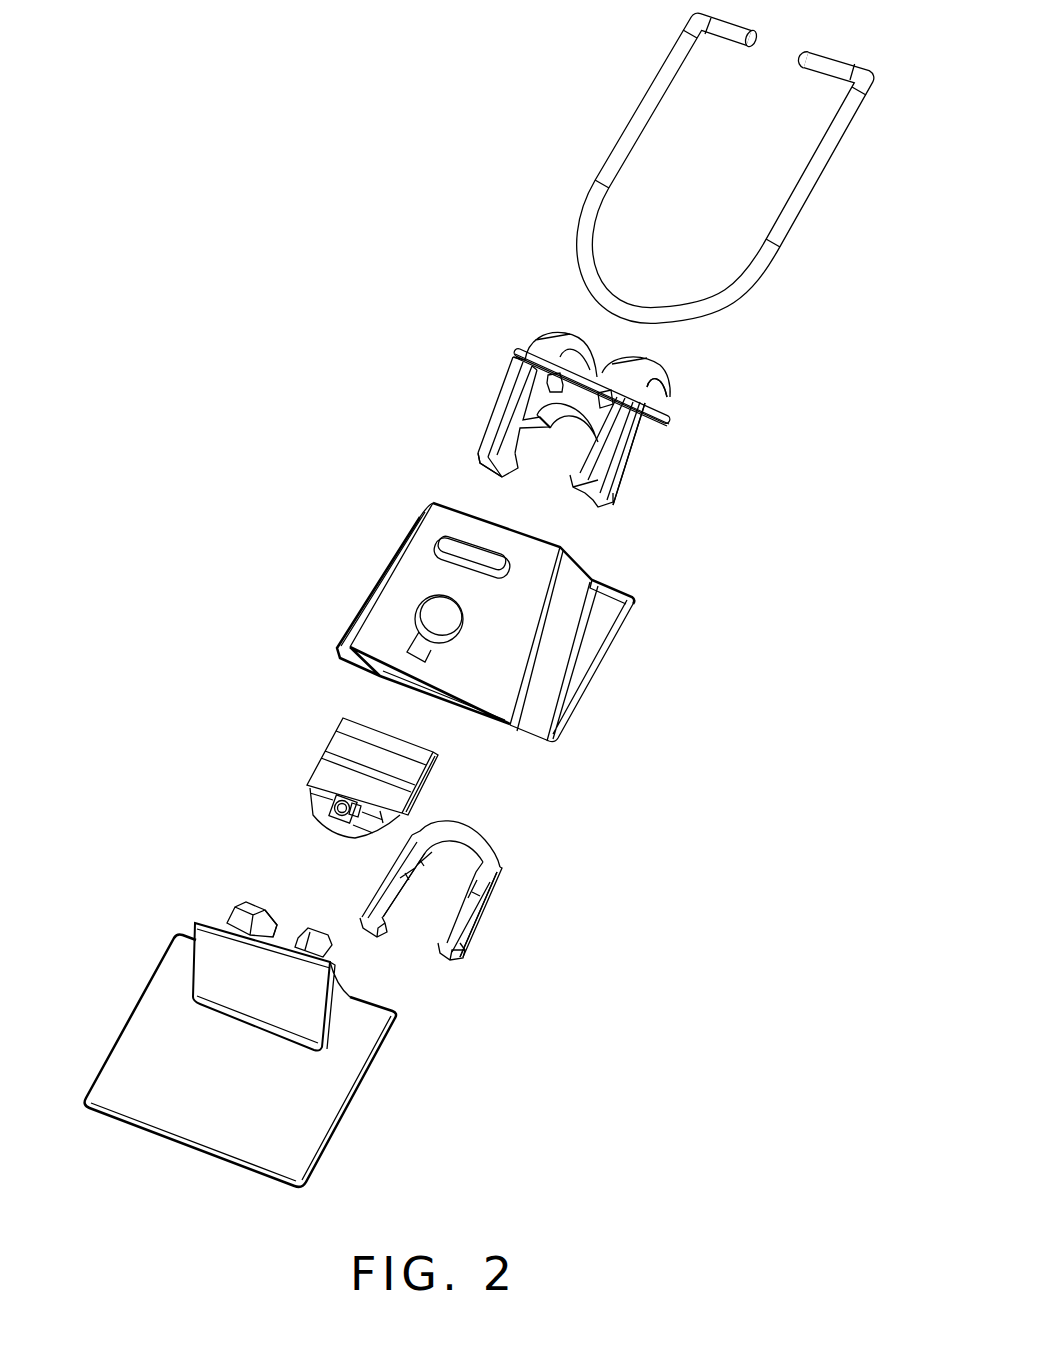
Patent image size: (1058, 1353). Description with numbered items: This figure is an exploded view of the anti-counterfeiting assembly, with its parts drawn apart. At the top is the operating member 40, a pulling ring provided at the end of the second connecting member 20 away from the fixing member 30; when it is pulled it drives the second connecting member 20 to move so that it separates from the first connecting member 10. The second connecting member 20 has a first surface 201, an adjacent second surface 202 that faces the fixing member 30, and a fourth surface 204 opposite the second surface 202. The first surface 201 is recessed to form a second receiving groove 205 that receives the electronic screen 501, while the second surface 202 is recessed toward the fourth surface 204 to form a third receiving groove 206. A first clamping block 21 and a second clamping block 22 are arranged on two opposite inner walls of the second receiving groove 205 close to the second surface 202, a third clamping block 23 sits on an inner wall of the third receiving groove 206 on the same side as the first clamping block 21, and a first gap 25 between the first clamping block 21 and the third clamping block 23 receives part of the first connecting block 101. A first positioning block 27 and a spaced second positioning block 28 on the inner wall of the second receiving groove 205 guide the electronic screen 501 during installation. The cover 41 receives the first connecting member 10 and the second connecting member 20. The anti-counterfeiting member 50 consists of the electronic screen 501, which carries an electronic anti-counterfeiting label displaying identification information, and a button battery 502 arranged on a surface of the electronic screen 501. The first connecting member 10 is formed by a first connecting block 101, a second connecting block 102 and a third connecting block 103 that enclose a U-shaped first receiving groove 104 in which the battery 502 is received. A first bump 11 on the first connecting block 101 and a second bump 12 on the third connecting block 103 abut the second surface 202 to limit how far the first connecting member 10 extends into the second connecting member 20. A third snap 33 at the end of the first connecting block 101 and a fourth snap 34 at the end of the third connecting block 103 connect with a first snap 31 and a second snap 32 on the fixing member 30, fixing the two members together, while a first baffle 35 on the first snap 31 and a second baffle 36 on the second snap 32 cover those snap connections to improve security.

The first connecting member 10 is at (467, 914).
The first bump 11 is at (373, 890).
The second bump 12 is at (468, 952).
The first connecting block 101 is at (390, 903).
The second connecting block 102 is at (483, 858).
The third connecting block 103 is at (487, 907).
The first receiving groove 104 is at (447, 871).
The second connecting member 20 is at (569, 403).
The first clamping block 21 is at (503, 448).
The second clamping block 22 is at (617, 490).
The third clamping block 23 is at (541, 394).
The first gap 25 is at (510, 453).
The first positioning block 27 is at (653, 392).
The second positioning block 28 is at (555, 373).
The first surface 201 is at (600, 453).
The second surface 202 is at (490, 463).
The fourth surface 204 is at (627, 358).
The second receiving groove 205 is at (527, 353).
The third receiving groove 206 is at (553, 461).
The fixing member 30 is at (251, 1019).
The first snap 31 is at (270, 927).
The second snap 32 is at (333, 955).
The third snap 33 is at (360, 912).
The fourth snap 34 is at (445, 960).
The first baffle 35 is at (240, 918).
The second baffle 36 is at (300, 938).
The operating member 40 is at (735, 290).
The cover 41 is at (570, 663).
The anti-counterfeiting member 50 is at (296, 778).
The electronic screen 501 is at (330, 765).
The battery 502 is at (334, 807).